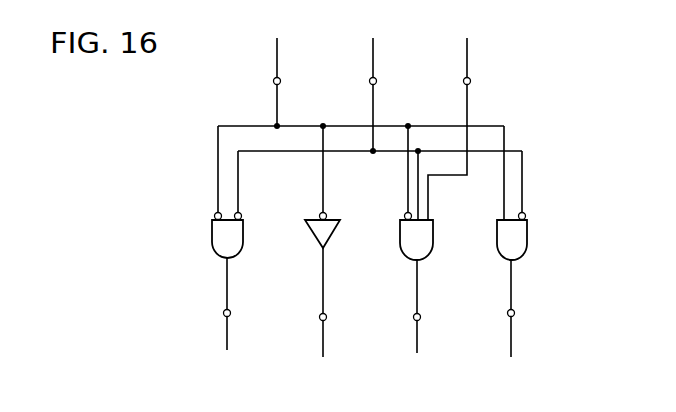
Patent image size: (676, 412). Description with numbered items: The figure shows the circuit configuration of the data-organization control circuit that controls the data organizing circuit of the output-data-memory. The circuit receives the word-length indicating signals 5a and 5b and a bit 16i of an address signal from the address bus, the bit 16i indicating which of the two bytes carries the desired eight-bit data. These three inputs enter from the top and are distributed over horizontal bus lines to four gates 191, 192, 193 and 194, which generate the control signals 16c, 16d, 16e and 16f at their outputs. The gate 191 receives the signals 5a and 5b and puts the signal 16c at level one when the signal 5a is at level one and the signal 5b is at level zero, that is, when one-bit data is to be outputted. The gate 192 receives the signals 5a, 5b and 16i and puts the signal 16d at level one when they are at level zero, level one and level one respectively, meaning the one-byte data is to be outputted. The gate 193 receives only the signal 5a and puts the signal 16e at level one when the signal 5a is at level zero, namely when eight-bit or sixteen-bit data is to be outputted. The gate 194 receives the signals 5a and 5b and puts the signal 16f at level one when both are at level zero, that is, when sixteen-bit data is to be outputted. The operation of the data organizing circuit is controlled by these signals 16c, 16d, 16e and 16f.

The word-length indicating signal 5a is at (274, 80).
The word-length indicating signal 5b is at (370, 80).
The bit of an address signal 16i is at (464, 80).
The gate 194 is at (245, 237).
The gate 193 is at (333, 237).
The gate 192 is at (434, 238).
The gate 191 is at (528, 238).
The control signal 16f is at (230, 310).
The control signal 16e is at (326, 314).
The control signal 16d is at (420, 314).
The control signal 16c is at (528, 288).